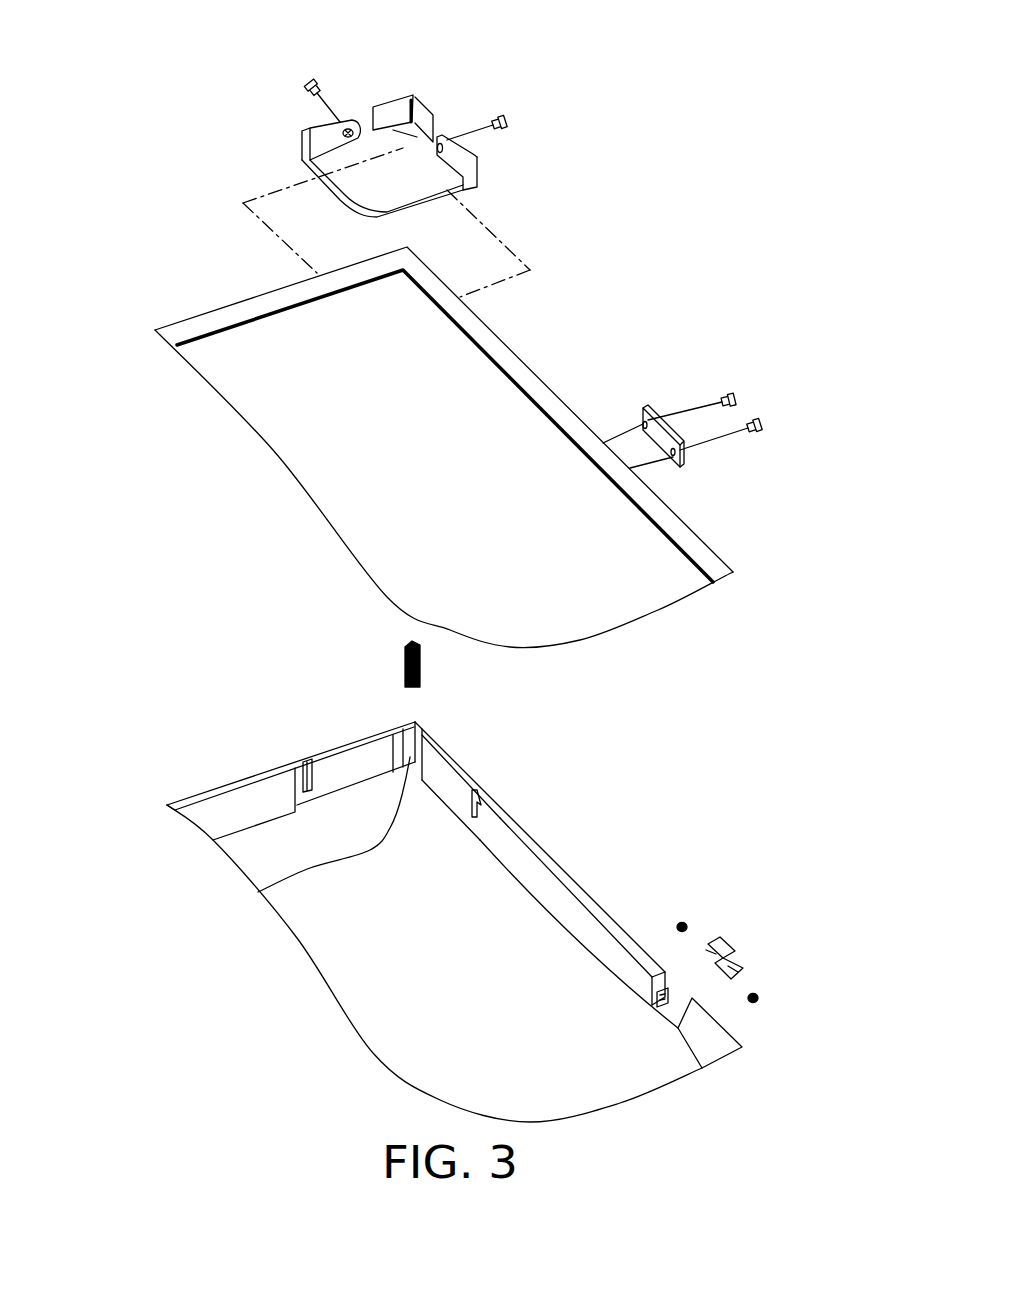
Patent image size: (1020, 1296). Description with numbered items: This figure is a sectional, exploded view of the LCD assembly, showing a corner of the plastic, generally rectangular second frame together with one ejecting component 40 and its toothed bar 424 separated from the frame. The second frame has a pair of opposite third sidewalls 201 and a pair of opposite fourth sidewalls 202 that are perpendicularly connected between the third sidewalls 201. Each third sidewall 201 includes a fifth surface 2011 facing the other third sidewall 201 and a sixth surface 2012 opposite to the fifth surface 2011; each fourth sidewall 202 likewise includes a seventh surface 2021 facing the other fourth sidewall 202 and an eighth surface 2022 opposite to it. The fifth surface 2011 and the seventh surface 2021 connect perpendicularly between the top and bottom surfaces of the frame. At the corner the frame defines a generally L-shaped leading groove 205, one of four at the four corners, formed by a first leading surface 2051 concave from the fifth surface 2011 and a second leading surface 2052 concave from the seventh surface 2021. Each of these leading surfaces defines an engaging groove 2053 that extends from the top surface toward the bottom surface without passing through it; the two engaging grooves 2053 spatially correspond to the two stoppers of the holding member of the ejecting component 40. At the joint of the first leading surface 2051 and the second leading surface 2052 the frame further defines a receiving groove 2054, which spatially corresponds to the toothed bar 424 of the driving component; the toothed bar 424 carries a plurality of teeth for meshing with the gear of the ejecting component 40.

The ejecting component 40 is at (451, 78).
The toothed bar 424 is at (406, 647).
The third sidewall 201 is at (112, 710).
The fifth surface 2011 is at (253, 800).
The sixth surface 2012 is at (202, 793).
The fourth sidewall 202 is at (655, 803).
The seventh surface 2021 is at (548, 893).
The eighth surface 2022 is at (542, 845).
The leading groove 205 is at (544, 685).
The first leading surface 2051 is at (383, 730).
The second leading surface 2052 is at (443, 770).
The engaging groove 2053 is at (307, 763).
The receiving groove 2054 is at (295, 884).